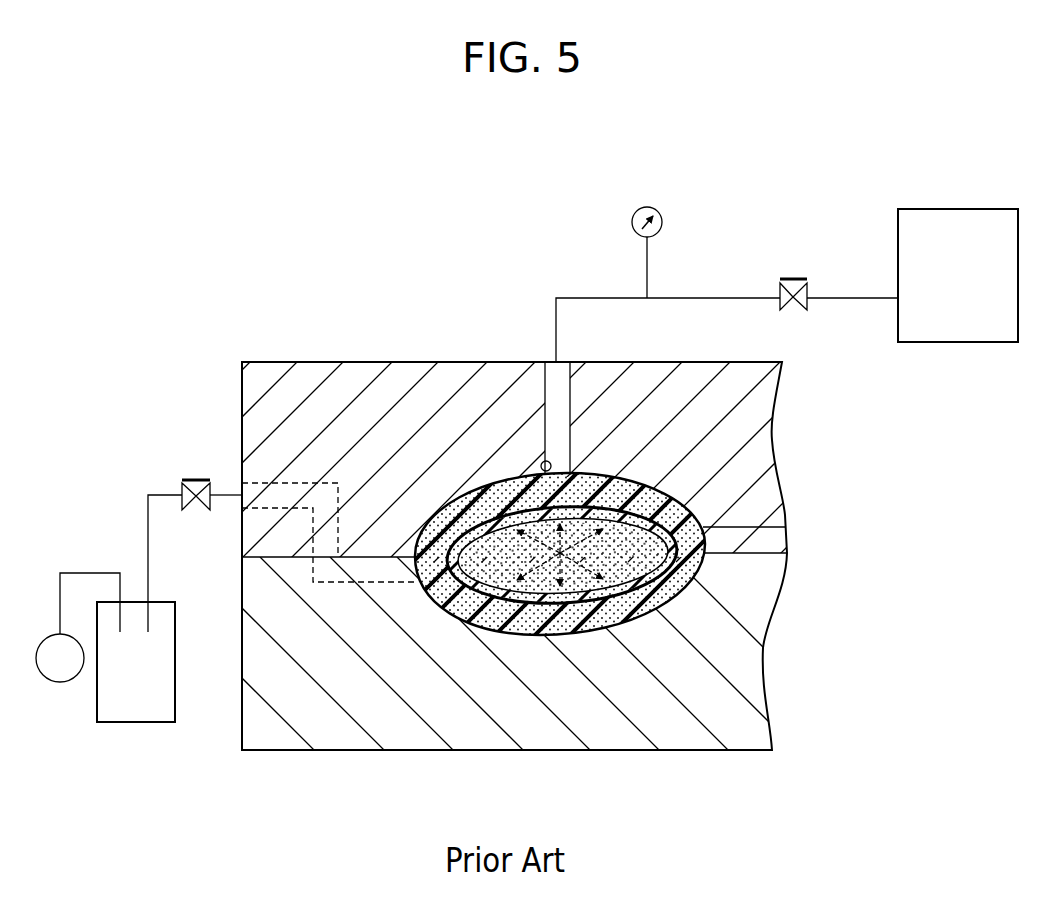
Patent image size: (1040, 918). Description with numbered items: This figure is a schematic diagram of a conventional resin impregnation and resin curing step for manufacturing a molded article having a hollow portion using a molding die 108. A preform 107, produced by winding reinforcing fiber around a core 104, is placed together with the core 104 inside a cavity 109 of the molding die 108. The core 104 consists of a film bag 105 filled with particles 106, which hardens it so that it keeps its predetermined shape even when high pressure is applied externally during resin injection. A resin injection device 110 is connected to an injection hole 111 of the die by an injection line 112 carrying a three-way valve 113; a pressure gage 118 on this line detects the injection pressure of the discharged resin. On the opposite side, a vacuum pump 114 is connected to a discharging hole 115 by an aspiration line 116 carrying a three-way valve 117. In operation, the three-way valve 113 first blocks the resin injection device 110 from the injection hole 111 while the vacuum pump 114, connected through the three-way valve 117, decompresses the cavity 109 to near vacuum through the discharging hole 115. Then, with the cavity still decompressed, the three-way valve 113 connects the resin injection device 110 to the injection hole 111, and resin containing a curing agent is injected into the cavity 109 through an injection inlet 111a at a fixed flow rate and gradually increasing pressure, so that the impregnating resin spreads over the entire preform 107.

The core 104 is at (868, 501).
The film bag 105 is at (703, 528).
The particles 106 is at (703, 562).
The preform 107 is at (672, 598).
The molding die 108 is at (232, 342).
The cavity 109 is at (647, 496).
The resin injection device 110 is at (957, 208).
The injection hole 111 is at (553, 360).
The injection inlet 111a is at (541, 463).
The injection line 112 is at (718, 296).
The three-way valve 113 is at (793, 278).
The vacuum pump 114 is at (60, 682).
The discharging hole 115 is at (243, 490).
The aspiration line 116 is at (148, 536).
The three-way valve 117 is at (196, 506).
The pressure gage 118 is at (661, 215).